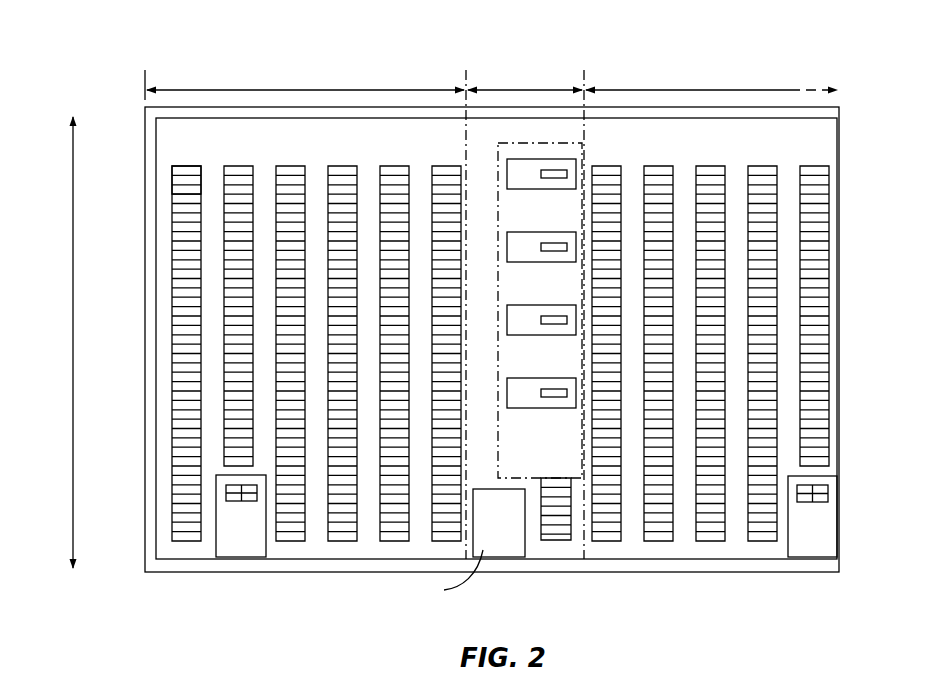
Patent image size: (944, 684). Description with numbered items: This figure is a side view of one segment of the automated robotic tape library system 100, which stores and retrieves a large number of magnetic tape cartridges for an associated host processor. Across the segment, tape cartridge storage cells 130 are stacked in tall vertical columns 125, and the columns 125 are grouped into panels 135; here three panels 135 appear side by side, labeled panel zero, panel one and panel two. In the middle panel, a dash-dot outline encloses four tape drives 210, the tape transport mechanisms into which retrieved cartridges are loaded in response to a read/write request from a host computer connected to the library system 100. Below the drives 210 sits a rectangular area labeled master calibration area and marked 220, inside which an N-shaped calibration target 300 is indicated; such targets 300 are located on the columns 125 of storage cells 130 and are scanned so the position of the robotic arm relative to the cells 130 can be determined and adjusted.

The library system 100 is at (226, 63).
The columns 125 is at (188, 159).
The tape cartridge storage cells 130 is at (172, 190).
The panels 135 is at (438, 79).
The tape drives 210 is at (507, 390).
The master calibration area 220 is at (497, 553).
The calibration targets 300 is at (514, 542).